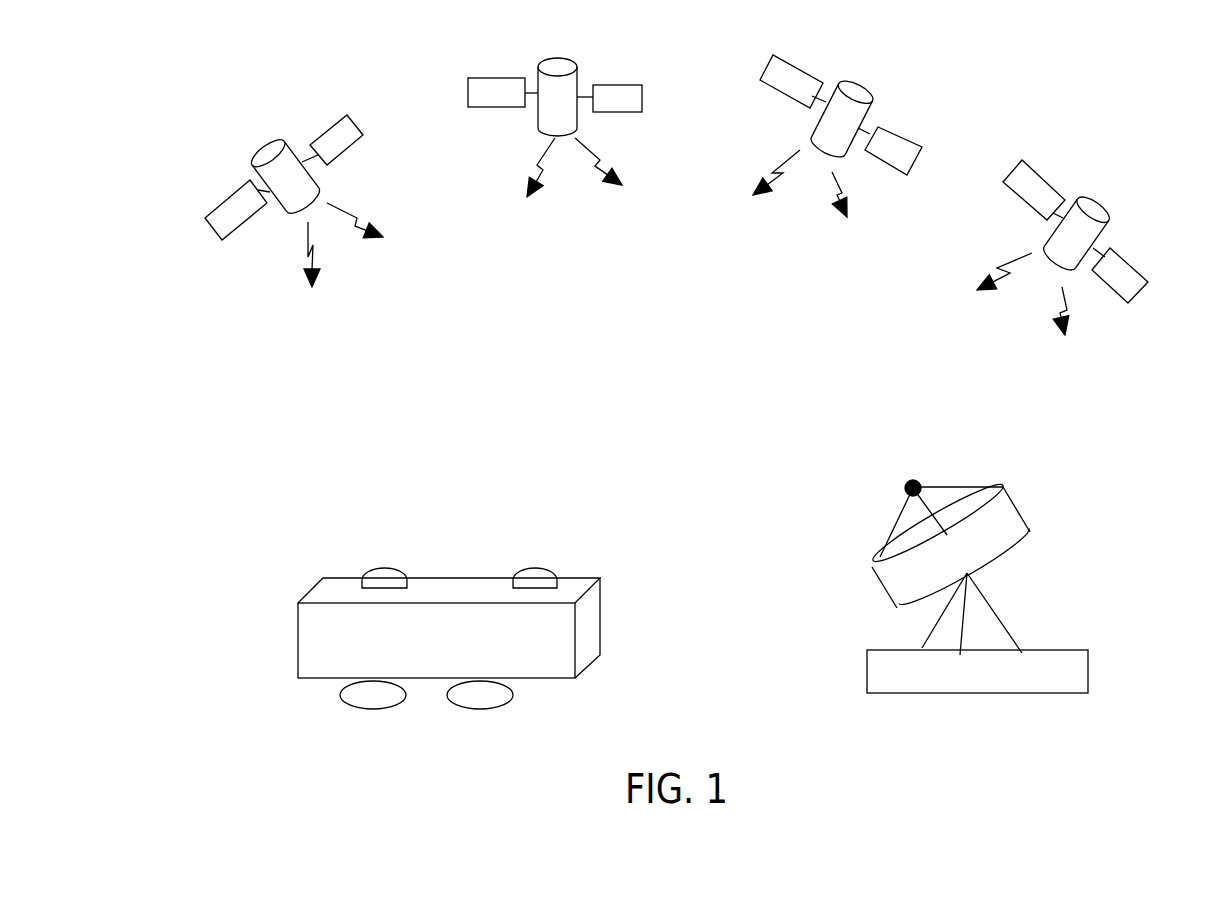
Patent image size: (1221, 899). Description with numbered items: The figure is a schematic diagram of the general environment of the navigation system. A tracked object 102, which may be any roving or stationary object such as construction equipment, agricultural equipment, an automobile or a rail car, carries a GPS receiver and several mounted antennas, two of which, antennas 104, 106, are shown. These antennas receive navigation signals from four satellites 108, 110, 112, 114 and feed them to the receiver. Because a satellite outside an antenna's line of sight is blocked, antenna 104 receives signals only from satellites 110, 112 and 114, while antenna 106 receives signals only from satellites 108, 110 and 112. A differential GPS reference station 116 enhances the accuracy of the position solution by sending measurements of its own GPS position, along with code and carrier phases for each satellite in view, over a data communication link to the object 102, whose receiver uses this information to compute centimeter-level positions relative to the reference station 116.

The object 102 is at (422, 596).
The antenna 104 is at (383, 568).
The antenna 106 is at (533, 568).
The satellite 108 is at (1103, 203).
The satellite 110 is at (873, 93).
The satellite 112 is at (543, 63).
The satellite 114 is at (253, 152).
The differential GPS reference station 116 is at (1023, 515).